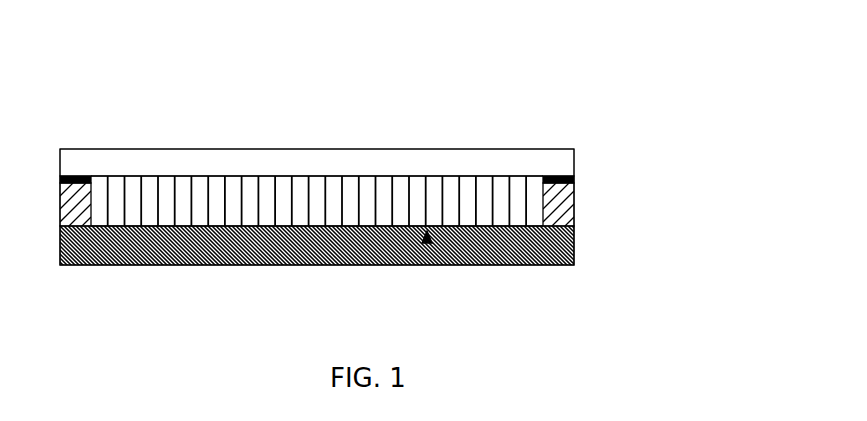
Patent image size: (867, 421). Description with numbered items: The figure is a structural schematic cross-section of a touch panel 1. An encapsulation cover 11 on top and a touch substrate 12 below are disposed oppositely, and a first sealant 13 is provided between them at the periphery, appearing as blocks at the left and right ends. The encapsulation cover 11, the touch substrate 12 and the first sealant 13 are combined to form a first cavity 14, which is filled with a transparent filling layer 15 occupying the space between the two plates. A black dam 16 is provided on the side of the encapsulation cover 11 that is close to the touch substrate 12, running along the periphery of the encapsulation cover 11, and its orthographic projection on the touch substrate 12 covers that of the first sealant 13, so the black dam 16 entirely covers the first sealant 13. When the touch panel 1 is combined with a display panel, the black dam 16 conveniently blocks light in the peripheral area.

The touch panel 1 is at (304, 52).
The encapsulation cover 11 is at (455, 157).
The touch substrate 12 is at (315, 265).
The first sealant 13 is at (574, 210).
The first cavity 14 is at (435, 265).
The transparent filling layer 15 is at (183, 207).
The black dam 16 is at (574, 179).